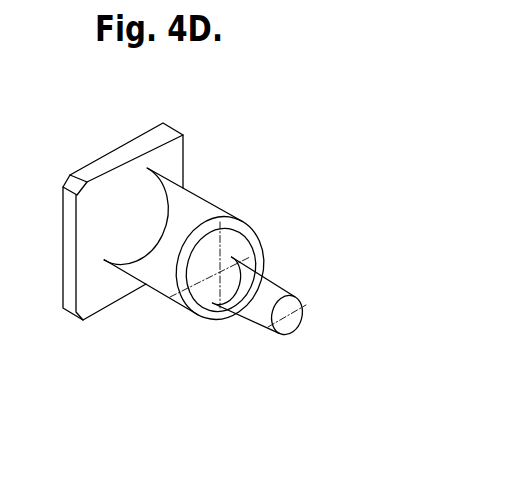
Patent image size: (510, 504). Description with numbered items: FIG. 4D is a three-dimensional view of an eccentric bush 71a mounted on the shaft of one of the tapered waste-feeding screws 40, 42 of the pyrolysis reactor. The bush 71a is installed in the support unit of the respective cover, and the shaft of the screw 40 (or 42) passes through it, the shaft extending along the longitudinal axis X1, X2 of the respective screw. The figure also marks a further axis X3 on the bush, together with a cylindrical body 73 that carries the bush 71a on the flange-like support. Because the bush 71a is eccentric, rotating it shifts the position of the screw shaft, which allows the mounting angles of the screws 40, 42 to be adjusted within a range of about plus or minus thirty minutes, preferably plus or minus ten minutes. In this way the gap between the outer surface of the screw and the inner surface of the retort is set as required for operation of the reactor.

The cylindrical housing 73 is at (193, 195).
The eccentric bush 71a is at (255, 225).
The tapered waste-feeding screw 40 is at (319, 266).
The tapered waste-feeding screw 42 is at (252, 306).
The longitudinal axis X1 is at (295, 392).
The longitudinal axis X2 is at (292, 292).
The axis X3 is at (249, 304).